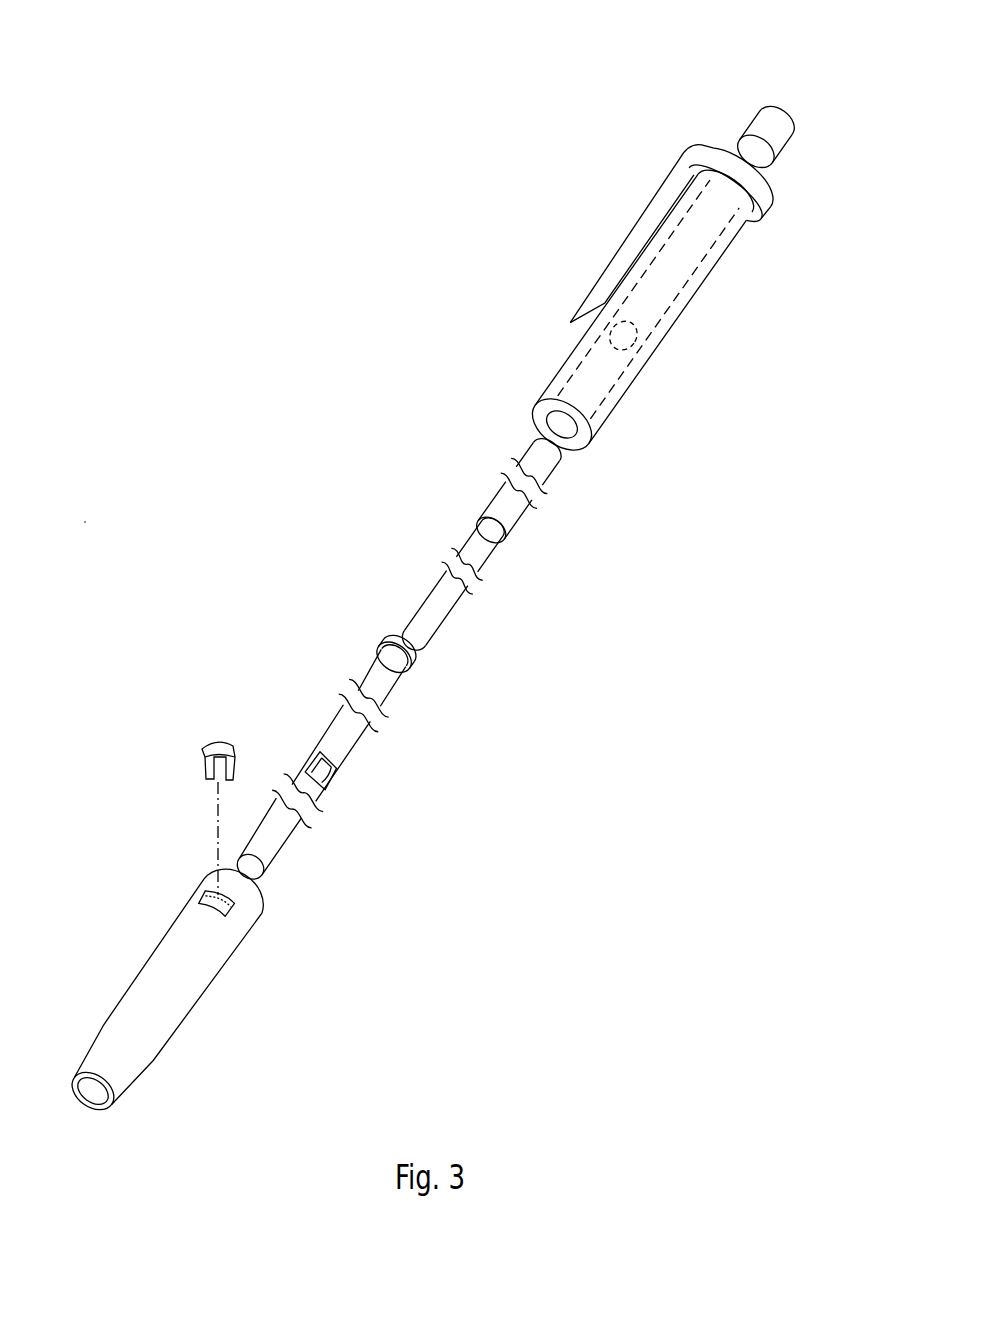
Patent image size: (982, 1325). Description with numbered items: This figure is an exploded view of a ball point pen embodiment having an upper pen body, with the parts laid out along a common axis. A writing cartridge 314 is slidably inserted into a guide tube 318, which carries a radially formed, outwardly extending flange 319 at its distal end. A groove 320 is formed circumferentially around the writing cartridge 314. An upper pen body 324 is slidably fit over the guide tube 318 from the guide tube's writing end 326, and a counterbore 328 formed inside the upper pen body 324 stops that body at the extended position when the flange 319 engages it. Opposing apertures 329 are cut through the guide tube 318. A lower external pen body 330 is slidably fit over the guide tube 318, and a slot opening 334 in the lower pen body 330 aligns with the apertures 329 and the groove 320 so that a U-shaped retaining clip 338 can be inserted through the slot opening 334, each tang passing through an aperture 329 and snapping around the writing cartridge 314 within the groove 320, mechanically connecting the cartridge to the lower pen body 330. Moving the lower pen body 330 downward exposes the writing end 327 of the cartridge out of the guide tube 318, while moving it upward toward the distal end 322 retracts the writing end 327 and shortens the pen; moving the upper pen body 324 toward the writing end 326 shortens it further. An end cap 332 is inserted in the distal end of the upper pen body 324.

The distal end 322 is at (443, 577).
The end cap 332 is at (748, 127).
The upper pen body 324 is at (700, 288).
The counterbore 328 is at (640, 348).
The groove 320 is at (500, 530).
The writing end 327 is at (404, 629).
The writing cartridge 314 is at (433, 608).
The flange 319 is at (413, 660).
The U-shaped retaining clip 338 is at (203, 747).
The opposing apertures 329 is at (332, 780).
The guide tube 318 is at (287, 845).
The slot opening 334 is at (260, 913).
The lower external pen body 330 is at (172, 983).
The writing end 326 is at (68, 1142).